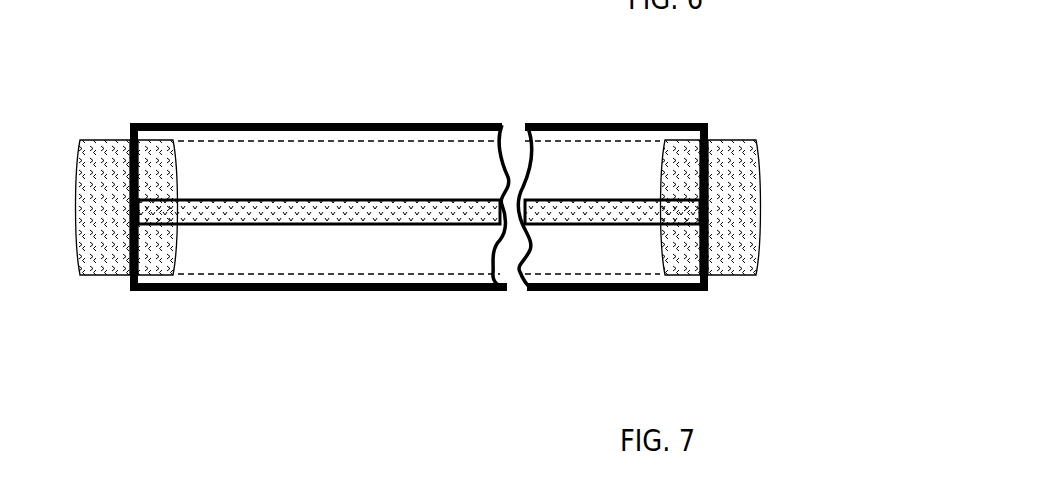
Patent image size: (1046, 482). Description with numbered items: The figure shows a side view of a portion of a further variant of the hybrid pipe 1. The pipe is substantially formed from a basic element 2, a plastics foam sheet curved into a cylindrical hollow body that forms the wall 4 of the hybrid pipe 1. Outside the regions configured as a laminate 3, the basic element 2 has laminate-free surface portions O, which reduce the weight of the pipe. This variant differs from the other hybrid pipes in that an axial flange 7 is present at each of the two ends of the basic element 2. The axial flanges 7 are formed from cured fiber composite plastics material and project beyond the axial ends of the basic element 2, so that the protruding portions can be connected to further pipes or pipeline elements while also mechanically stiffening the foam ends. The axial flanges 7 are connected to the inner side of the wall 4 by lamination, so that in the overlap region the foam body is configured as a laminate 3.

The hybrid pipe 1 is at (358, 103).
The basic element 2 is at (460, 123).
The laminate 3 is at (340, 213).
The wall 4 is at (450, 277).
The axial flange 7 is at (98, 150).
The laminate-free surface portion O is at (213, 155).